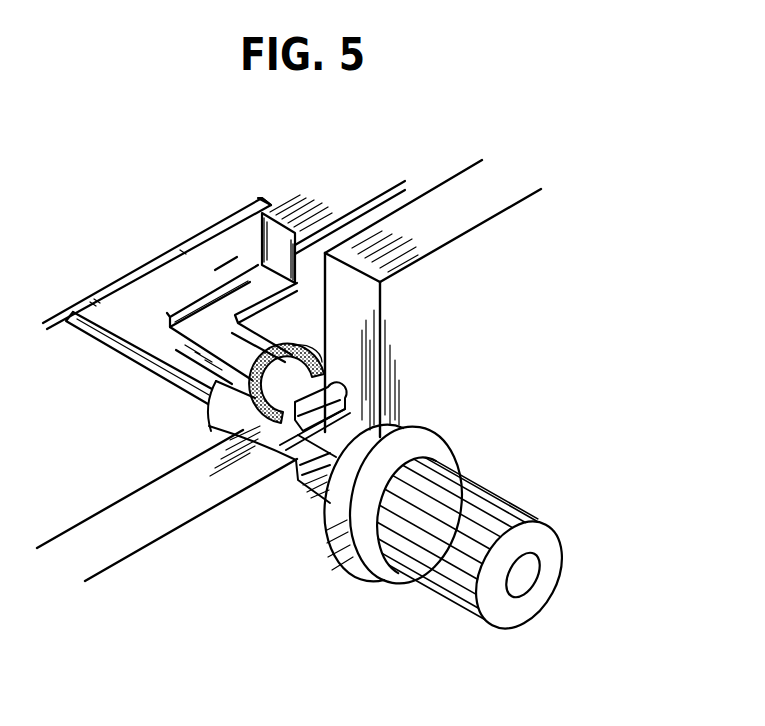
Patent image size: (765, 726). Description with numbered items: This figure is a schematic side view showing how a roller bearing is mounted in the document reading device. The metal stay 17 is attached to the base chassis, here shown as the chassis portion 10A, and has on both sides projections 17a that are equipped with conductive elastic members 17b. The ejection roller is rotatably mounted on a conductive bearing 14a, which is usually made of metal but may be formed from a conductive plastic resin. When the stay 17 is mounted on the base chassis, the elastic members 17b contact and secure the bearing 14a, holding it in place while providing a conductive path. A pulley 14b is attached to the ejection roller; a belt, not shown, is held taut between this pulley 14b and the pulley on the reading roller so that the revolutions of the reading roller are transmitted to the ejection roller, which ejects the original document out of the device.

The guide rail 10A is at (450, 193).
The stay 17 is at (287, 218).
The projections 17a is at (345, 392).
The conductive elastic members 17b is at (279, 347).
The conductive bearing 14a is at (297, 503).
The pulley 14b is at (375, 568).